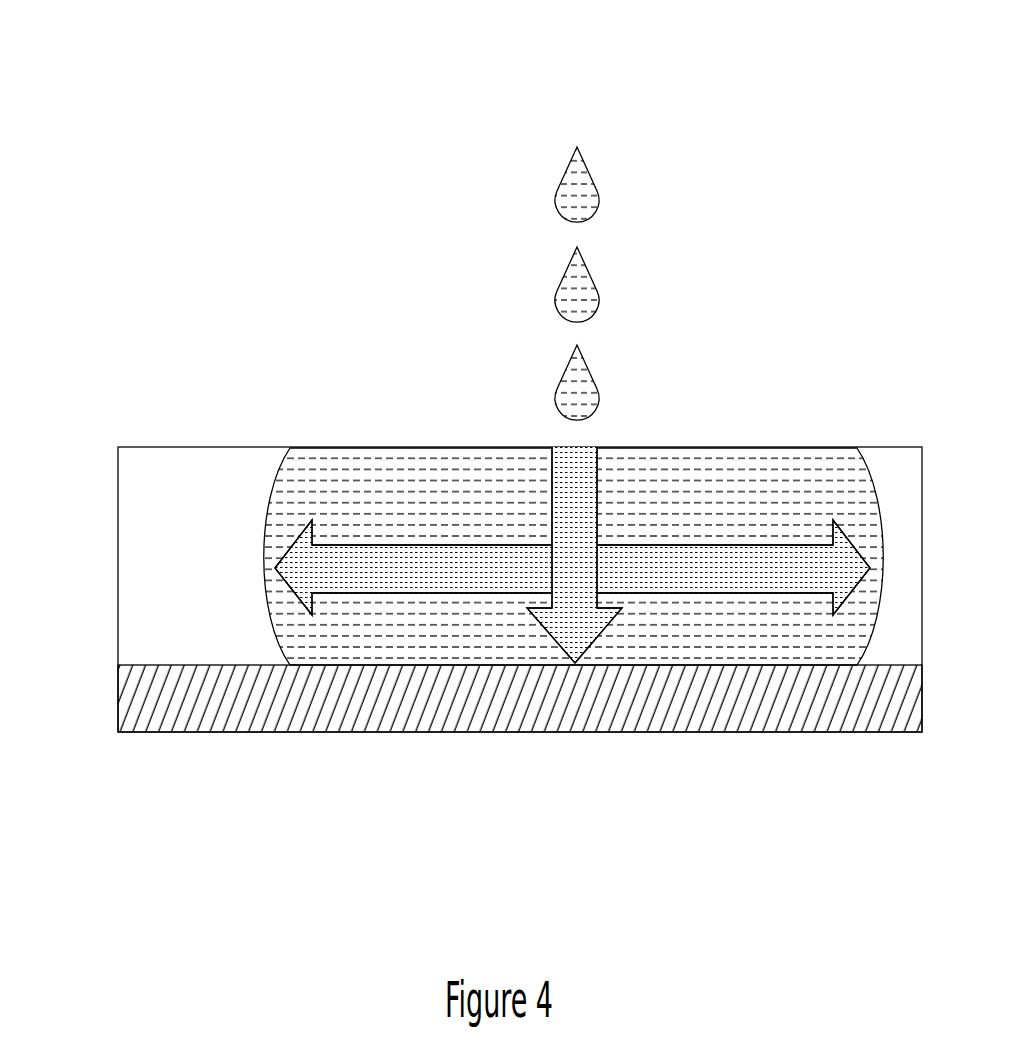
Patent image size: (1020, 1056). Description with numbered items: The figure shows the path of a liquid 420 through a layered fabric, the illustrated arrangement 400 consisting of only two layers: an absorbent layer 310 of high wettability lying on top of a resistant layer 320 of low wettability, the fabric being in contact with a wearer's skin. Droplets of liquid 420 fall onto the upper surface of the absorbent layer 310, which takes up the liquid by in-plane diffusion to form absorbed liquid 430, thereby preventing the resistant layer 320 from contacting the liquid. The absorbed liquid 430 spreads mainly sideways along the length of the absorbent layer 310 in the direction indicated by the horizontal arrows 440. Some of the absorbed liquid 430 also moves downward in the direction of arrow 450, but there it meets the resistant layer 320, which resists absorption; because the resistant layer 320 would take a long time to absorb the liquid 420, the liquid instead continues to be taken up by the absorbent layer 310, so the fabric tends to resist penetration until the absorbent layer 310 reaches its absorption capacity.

The coating process 400 is at (248, 170).
The absorbent layer 310 is at (168, 532).
The resistant layer 320 is at (167, 708).
The liquid 420 is at (573, 385).
The absorbed liquid 430 is at (648, 487).
The arrows 440 is at (737, 560).
The arrow 450 is at (580, 507).